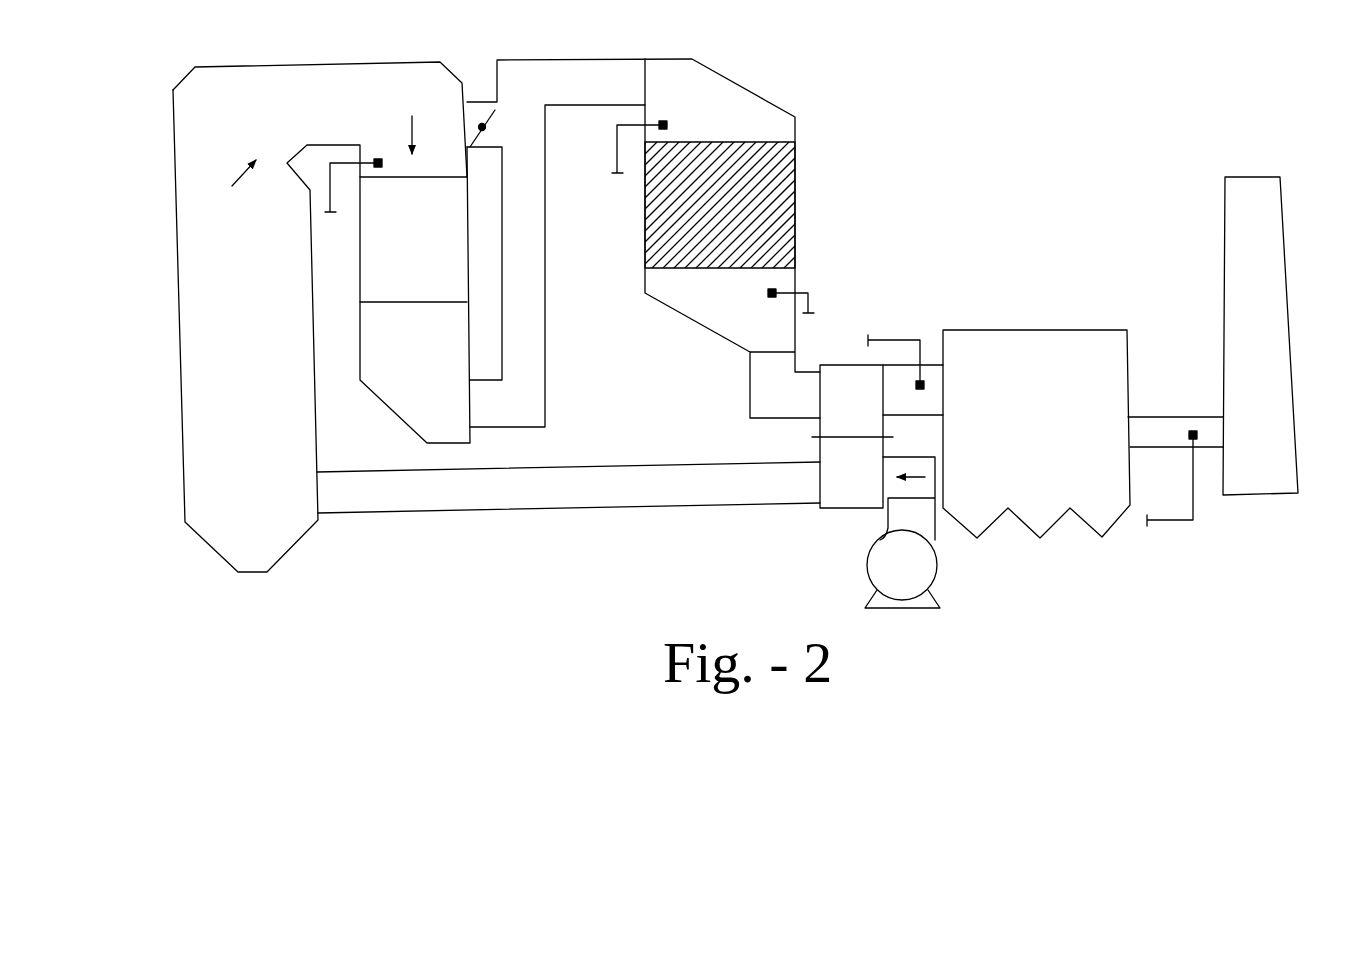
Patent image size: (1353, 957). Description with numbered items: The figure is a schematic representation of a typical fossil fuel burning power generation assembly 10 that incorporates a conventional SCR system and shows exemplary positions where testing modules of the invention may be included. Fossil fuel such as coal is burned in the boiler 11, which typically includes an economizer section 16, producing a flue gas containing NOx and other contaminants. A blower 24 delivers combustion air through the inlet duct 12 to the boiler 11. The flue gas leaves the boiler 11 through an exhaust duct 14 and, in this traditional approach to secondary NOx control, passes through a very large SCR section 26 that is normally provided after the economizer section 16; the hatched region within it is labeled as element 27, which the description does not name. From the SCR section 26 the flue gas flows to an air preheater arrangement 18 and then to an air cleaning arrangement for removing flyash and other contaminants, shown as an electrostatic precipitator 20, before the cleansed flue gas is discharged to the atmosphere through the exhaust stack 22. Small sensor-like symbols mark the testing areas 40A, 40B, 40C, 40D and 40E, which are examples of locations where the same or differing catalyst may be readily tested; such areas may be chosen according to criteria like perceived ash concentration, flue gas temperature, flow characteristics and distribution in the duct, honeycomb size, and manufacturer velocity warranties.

The power generation assembly 10 is at (191, 575).
The boiler 11 is at (198, 402).
The inlet duct 12 is at (598, 495).
The exhaust duct 14 is at (532, 298).
The economizer section 16 is at (420, 258).
The air preheater arrangement 18 is at (848, 487).
The electrostatic precipitator 20 is at (1043, 348).
The exhaust stack 22 is at (1265, 288).
The blower 24 is at (923, 568).
The SCR section 26 is at (747, 87).
The catalyst bed 27 is at (775, 166).
The catalyst testing area 40A is at (378, 158).
The catalyst testing area 40B is at (808, 293).
The catalyst testing area 40C is at (900, 340).
The catalyst testing area 40D is at (1167, 520).
The catalyst testing area 40E is at (612, 152).